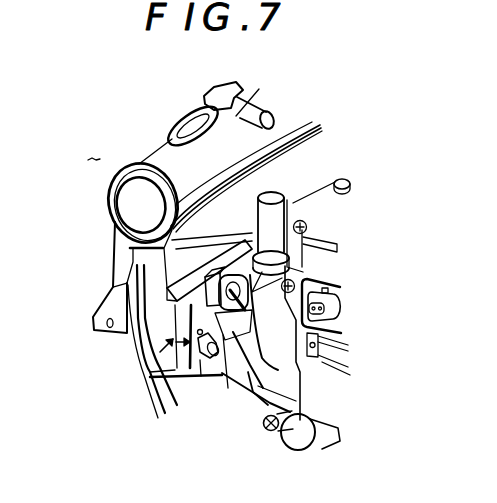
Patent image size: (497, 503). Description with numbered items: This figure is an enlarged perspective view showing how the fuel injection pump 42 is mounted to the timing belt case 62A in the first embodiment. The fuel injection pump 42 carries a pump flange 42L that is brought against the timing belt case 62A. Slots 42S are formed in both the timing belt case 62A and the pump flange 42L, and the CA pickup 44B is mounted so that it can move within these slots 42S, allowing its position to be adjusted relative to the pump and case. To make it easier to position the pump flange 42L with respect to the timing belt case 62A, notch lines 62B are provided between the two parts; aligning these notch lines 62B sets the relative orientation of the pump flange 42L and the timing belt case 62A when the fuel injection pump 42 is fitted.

The fuel injection pump 42 is at (292, 204).
The CA pickup 44B is at (205, 303).
The notch lines 62B is at (178, 352).
The timing belt case 62A is at (170, 377).
The slots 42S is at (208, 365).
The pump flange 42L is at (249, 374).